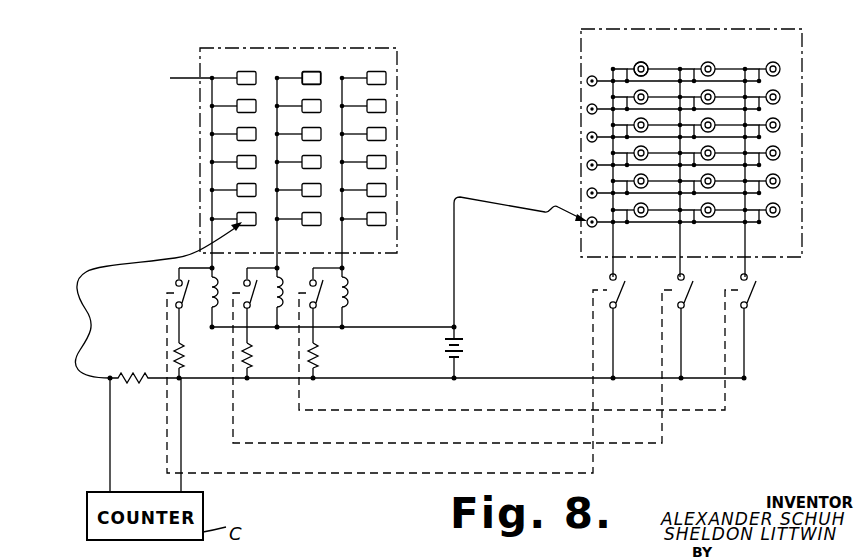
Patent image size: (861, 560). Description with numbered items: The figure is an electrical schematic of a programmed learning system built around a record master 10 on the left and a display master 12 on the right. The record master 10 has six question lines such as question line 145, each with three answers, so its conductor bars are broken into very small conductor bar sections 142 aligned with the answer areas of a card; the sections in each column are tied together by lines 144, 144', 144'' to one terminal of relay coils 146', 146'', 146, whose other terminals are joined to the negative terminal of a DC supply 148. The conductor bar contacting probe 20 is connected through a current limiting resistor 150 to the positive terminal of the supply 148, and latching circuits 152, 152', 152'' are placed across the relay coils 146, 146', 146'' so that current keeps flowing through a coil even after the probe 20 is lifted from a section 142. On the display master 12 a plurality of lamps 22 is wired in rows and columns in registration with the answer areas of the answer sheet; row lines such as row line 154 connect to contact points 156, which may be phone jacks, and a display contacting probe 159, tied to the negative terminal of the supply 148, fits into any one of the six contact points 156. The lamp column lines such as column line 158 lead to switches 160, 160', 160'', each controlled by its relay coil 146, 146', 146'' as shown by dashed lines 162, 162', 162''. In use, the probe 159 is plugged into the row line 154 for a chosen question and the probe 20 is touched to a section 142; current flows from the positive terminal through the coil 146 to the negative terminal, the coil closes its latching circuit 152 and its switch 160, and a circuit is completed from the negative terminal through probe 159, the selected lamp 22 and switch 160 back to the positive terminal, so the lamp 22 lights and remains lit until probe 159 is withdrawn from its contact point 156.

The record master 10 is at (401, 58).
The display master 12 is at (572, 51).
The conductor bar contacting probe 20 is at (193, 245).
The lamp 22 is at (650, 62).
The conductor bar section 142 is at (366, 75).
The line 144 is at (237, 170).
The line 144' is at (303, 170).
The line 144'' is at (368, 170).
The question line 145 is at (176, 77).
The relay coil 146 is at (202, 351).
The relay coil 146' is at (269, 355).
The relay coil 146'' is at (342, 355).
The DC supply 148 is at (443, 351).
The current limiting resistor 150 is at (150, 352).
The latching circuit 152 is at (169, 324).
The latching circuit 152' is at (250, 317).
The latching circuit 152'' is at (315, 317).
The row line 154 is at (657, 80).
The contact point 156 is at (584, 75).
The lamp column line 158 is at (678, 238).
The display contacting probe 159 is at (556, 207).
The switch 160 is at (638, 325).
The switch 160' is at (707, 325).
The switch 160'' is at (774, 325).
The dashed line 162 is at (387, 381).
The dashed line 162' is at (454, 366).
The dashed line 162'' is at (518, 350).